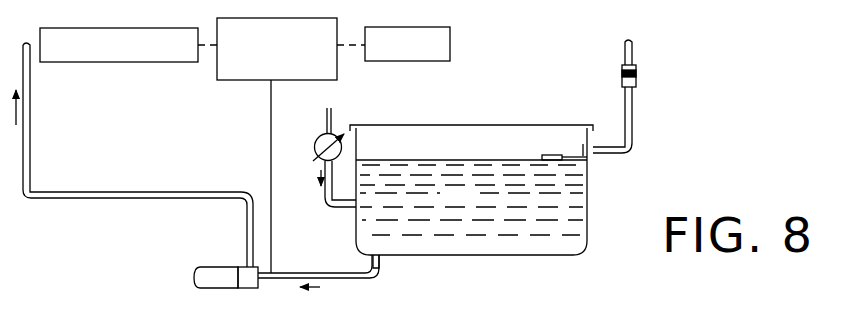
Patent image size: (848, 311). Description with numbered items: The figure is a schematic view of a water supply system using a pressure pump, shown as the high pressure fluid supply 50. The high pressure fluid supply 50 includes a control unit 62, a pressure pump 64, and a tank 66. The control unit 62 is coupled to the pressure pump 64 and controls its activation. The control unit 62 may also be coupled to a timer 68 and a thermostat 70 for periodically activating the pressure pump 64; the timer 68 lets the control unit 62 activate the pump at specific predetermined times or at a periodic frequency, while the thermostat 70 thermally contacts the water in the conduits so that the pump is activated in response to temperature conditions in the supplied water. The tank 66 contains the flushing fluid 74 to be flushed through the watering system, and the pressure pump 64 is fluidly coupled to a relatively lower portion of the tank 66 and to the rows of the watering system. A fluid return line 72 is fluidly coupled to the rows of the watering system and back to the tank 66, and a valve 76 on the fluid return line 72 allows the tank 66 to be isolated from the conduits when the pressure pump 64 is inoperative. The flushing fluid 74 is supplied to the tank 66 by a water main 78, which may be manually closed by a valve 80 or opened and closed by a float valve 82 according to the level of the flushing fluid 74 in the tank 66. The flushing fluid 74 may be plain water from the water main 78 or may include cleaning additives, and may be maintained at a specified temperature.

The high pressure fluid supply 50 is at (514, 81).
The control unit 62 is at (255, 81).
The pressure pump 64 is at (222, 267).
The tank 66 is at (588, 200).
The timer 68 is at (420, 61).
The thermostat 70 is at (165, 63).
The fluid return line 72 is at (322, 196).
The flushing fluid 74 is at (471, 197).
The valve 76 is at (318, 134).
The water main 78 is at (634, 118).
The valve 80 is at (637, 76).
The float valve 82 is at (549, 155).